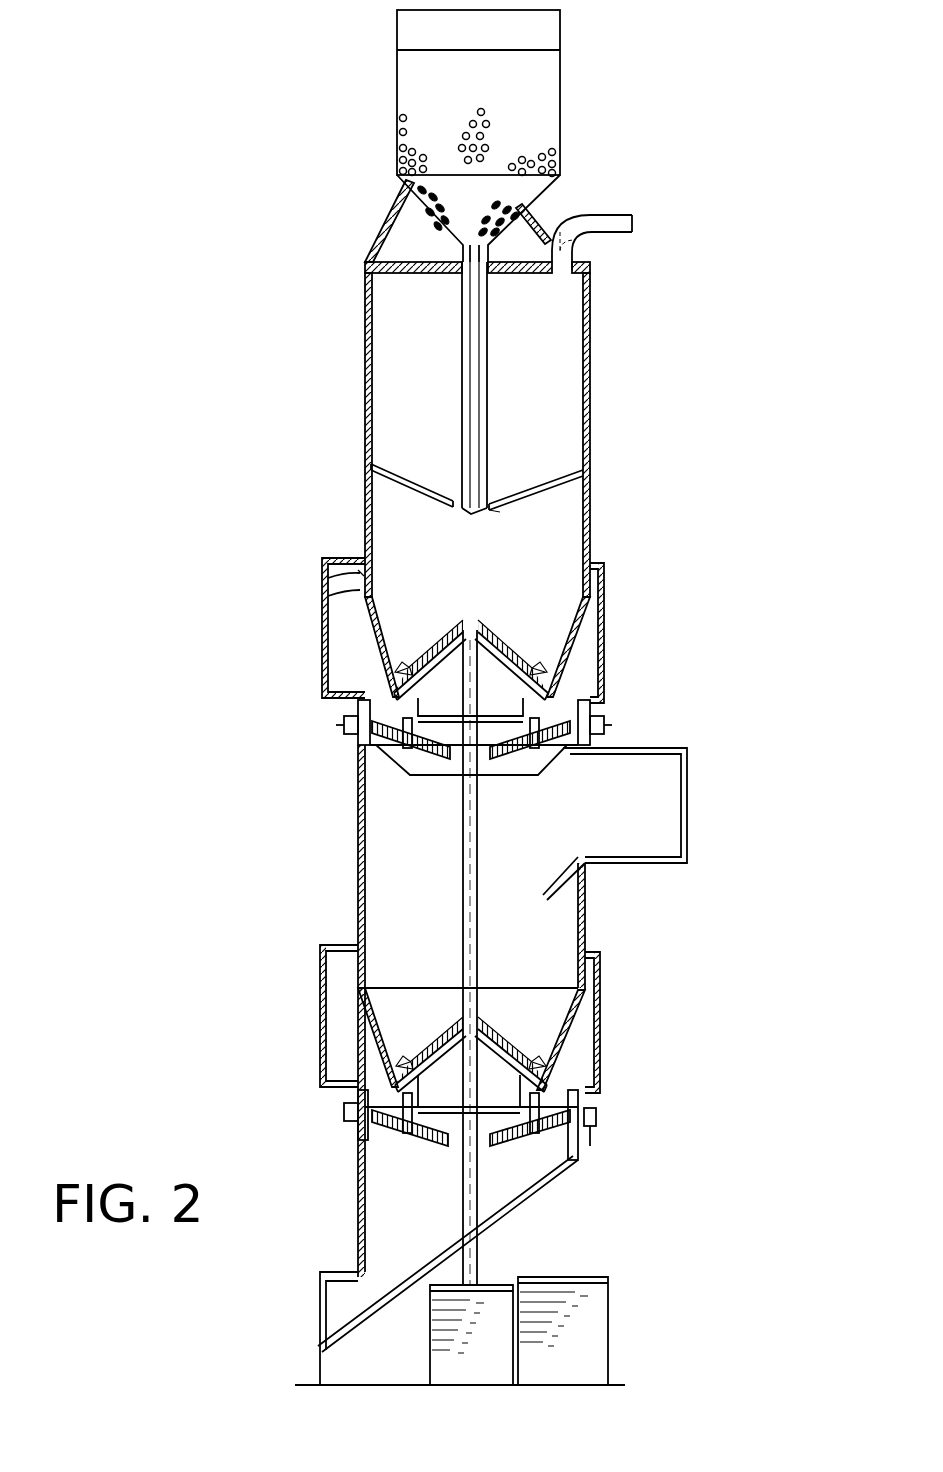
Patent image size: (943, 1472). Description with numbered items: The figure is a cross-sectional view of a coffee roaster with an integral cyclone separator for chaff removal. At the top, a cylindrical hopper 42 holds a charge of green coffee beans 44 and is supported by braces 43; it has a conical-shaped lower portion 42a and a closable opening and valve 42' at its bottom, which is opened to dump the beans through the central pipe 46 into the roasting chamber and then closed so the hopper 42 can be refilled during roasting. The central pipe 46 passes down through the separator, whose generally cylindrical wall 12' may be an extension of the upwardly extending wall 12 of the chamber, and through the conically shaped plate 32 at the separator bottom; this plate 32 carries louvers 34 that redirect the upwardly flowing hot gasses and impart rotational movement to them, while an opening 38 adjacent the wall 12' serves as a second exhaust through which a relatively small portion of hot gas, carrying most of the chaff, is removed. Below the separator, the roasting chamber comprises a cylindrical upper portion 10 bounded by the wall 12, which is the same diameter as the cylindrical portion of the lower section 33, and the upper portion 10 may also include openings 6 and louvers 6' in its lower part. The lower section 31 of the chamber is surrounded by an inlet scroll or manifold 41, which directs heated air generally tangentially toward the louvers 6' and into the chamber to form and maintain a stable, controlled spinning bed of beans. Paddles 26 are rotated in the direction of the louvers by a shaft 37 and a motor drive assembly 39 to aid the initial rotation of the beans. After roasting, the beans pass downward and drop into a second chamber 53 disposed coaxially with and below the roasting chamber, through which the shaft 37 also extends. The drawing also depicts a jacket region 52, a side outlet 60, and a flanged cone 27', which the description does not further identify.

The cylindrical hopper 42 is at (527, 136).
The green coffee beans 44 is at (403, 118).
The conical-shaped lower portion 42a is at (410, 188).
The valve 42' is at (469, 221).
The braces 43 is at (556, 232).
The opening 38 is at (584, 286).
The cylindrical wall 12' is at (477, 435).
The central pipe 46 is at (466, 390).
The louvers 34 is at (416, 482).
The conically shaped plate 32 is at (500, 512).
The upwardly extending wall 12 is at (477, 618).
The upper portion 10 is at (634, 588).
The louvers 6' is at (313, 586).
The paddles 26 is at (422, 668).
The openings 6 is at (525, 652).
The left jacket 52 is at (343, 660).
The lower section 33 is at (598, 643).
The lower section 31 is at (735, 583).
The inlet scroll or manifold 41 is at (606, 682).
The side outlet 60 is at (556, 762).
The flange cone 27' is at (474, 760).
The shaft 37 is at (480, 868).
The second chamber 53 is at (340, 912).
The motor drive assembly 39 is at (508, 1285).